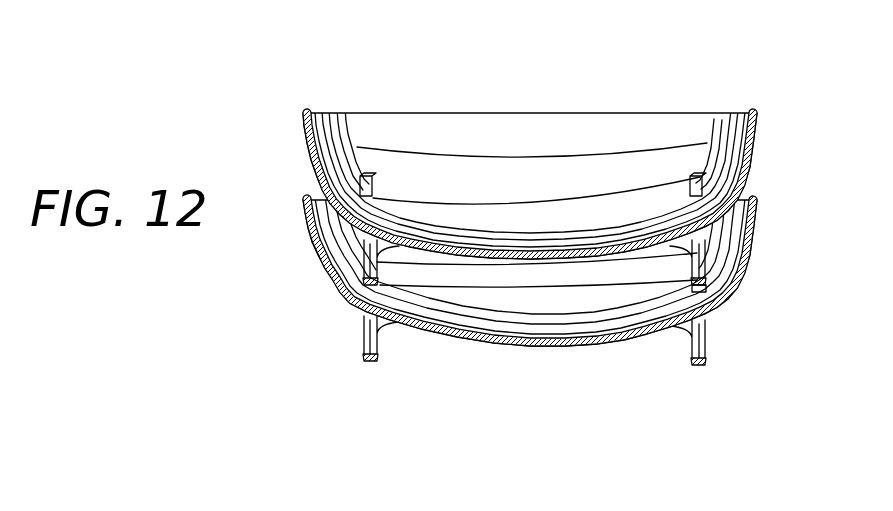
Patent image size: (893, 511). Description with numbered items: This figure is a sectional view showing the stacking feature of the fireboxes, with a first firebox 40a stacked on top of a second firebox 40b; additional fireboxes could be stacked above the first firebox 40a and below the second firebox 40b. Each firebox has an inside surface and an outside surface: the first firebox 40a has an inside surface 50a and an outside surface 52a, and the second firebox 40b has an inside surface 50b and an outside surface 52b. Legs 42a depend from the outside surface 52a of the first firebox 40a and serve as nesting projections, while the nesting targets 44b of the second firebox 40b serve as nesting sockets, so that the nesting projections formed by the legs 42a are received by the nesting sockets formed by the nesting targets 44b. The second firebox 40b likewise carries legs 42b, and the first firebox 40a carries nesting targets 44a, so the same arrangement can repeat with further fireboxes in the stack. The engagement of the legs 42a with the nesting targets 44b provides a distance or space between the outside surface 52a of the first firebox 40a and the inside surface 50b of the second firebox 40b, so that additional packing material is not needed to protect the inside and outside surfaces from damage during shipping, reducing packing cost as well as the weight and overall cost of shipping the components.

The first firebox 40a is at (294, 165).
The second firebox 40b is at (298, 256).
The legs 42a is at (703, 247).
The legs 42b is at (703, 346).
The nesting targets 44a is at (700, 188).
The nesting targets 44b is at (707, 292).
The inside surface 50a is at (457, 256).
The inside surface 50b is at (548, 347).
The outside surface 52a is at (452, 168).
The outside surface 52b is at (489, 262).